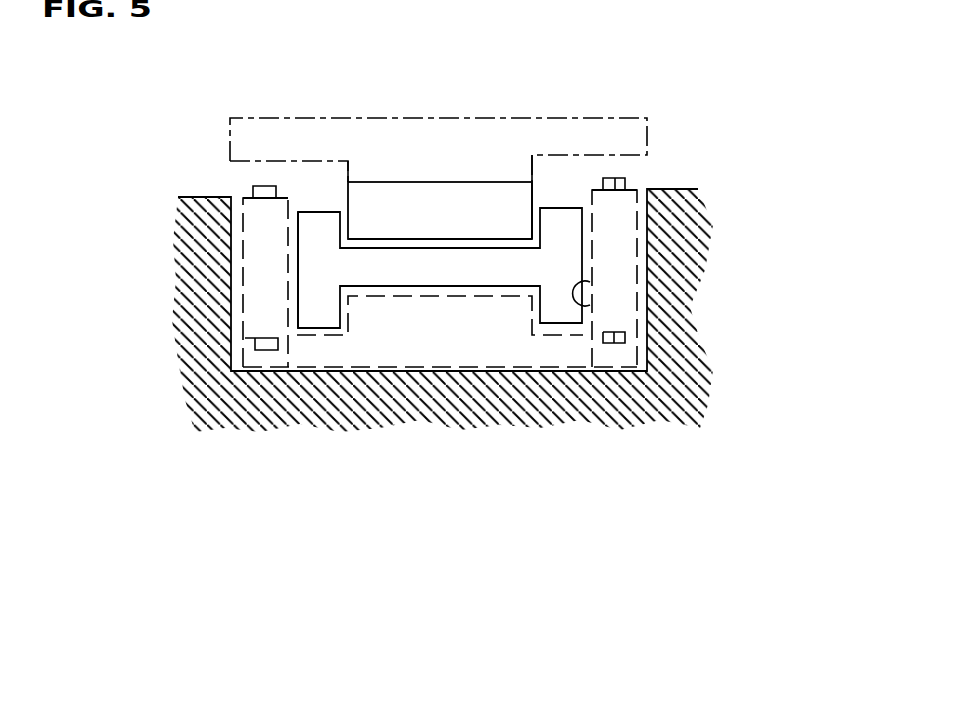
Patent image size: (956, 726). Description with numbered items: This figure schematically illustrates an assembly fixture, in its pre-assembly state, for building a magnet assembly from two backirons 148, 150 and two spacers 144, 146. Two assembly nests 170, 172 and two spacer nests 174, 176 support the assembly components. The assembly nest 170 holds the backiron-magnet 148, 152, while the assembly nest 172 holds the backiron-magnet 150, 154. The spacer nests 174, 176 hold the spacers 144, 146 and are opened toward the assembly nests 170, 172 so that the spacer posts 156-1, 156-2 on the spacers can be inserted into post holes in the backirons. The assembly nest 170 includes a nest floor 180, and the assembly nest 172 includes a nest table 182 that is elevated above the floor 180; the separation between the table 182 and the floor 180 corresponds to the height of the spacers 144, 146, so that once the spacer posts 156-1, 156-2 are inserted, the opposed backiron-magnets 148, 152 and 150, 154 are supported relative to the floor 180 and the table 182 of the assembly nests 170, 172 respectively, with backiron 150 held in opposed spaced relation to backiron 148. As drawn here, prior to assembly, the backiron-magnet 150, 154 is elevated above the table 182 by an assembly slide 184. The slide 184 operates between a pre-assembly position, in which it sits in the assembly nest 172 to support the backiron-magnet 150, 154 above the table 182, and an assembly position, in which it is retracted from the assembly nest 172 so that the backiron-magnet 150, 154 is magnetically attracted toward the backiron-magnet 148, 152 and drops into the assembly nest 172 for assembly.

The spacer 144 is at (257, 268).
The spacer 146 is at (617, 243).
The backiron 148 is at (370, 357).
The backiron 150 is at (588, 135).
The magnet 152 is at (405, 308).
The magnet 154 is at (388, 167).
The spacer post 156-1 is at (255, 345).
The spacer post 156-2 is at (252, 190).
The assembly nest 170 is at (538, 305).
The assembly nest 172 is at (537, 224).
The spacer nest 174 is at (292, 263).
The spacer nest 176 is at (615, 303).
The nest floor 180 is at (558, 374).
The nest table 182 is at (480, 238).
The assembly slide 184 is at (447, 215).